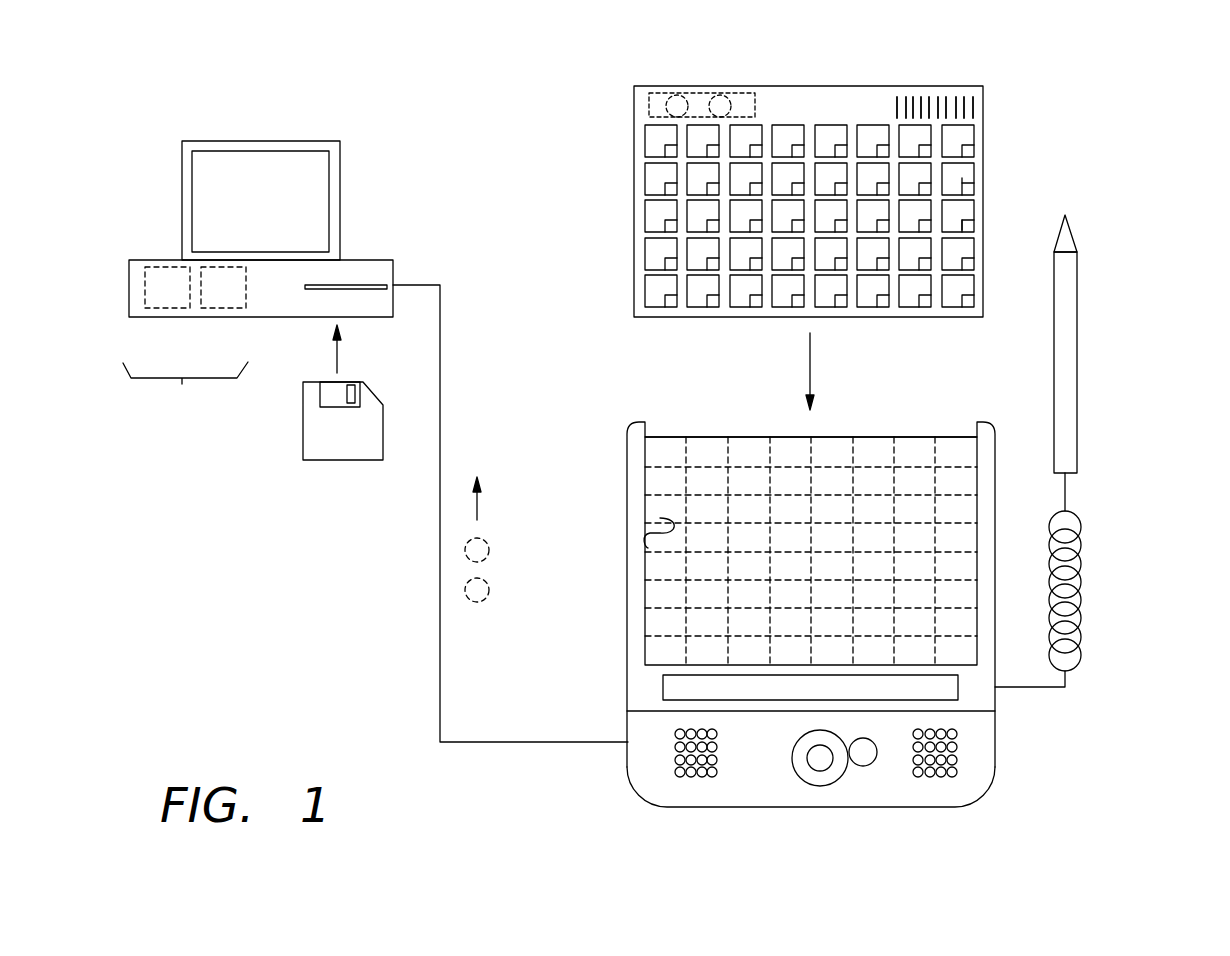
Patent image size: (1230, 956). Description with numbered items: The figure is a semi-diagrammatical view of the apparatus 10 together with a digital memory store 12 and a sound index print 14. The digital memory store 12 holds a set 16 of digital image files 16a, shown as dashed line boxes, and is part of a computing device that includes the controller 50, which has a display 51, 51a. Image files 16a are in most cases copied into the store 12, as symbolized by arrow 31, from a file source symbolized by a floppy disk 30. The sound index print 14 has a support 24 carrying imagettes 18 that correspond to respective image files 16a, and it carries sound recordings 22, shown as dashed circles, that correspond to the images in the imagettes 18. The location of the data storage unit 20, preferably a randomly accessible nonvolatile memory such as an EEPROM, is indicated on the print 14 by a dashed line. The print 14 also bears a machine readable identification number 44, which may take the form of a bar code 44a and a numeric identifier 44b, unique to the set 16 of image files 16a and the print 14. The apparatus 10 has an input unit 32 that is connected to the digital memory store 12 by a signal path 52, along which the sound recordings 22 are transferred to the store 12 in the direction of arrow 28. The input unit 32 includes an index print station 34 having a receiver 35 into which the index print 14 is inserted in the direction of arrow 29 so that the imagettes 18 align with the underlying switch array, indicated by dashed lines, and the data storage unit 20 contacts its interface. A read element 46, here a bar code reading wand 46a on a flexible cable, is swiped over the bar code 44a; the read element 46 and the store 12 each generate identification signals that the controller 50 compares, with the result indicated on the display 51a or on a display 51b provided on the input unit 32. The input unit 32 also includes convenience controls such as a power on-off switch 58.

The apparatus 10 is at (573, 381).
The digital memory store 12 is at (306, 257).
The controller 50 is at (363, 258).
The display 51 is at (570, 384).
The display 51a is at (240, 140).
The display 51b is at (663, 682).
The set of digital image files 16 is at (185, 344).
The digital image file 16a is at (230, 308).
The floppy disk 30 is at (337, 460).
The arrow 31 is at (337, 372).
The signal path 52 is at (440, 617).
The arrow 28 is at (477, 507).
The sound recordings 22 is at (489, 548).
The sound index print 14 is at (809, 187).
The support 24 is at (723, 313).
The imagettes 18 is at (972, 178).
The data storage unit 20 is at (650, 93).
The machine readable identification number 44 is at (916, 66).
The identification bar code 44a is at (920, 98).
The identification number 44b is at (833, 98).
The arrow 29 is at (810, 363).
The input unit 32 is at (803, 610).
The index print station 34 is at (995, 532).
The receiver 35 is at (720, 437).
The power on-off switch 58 is at (816, 786).
The read element 46 is at (1095, 451).
The bar code reading wand 46a is at (1077, 330).